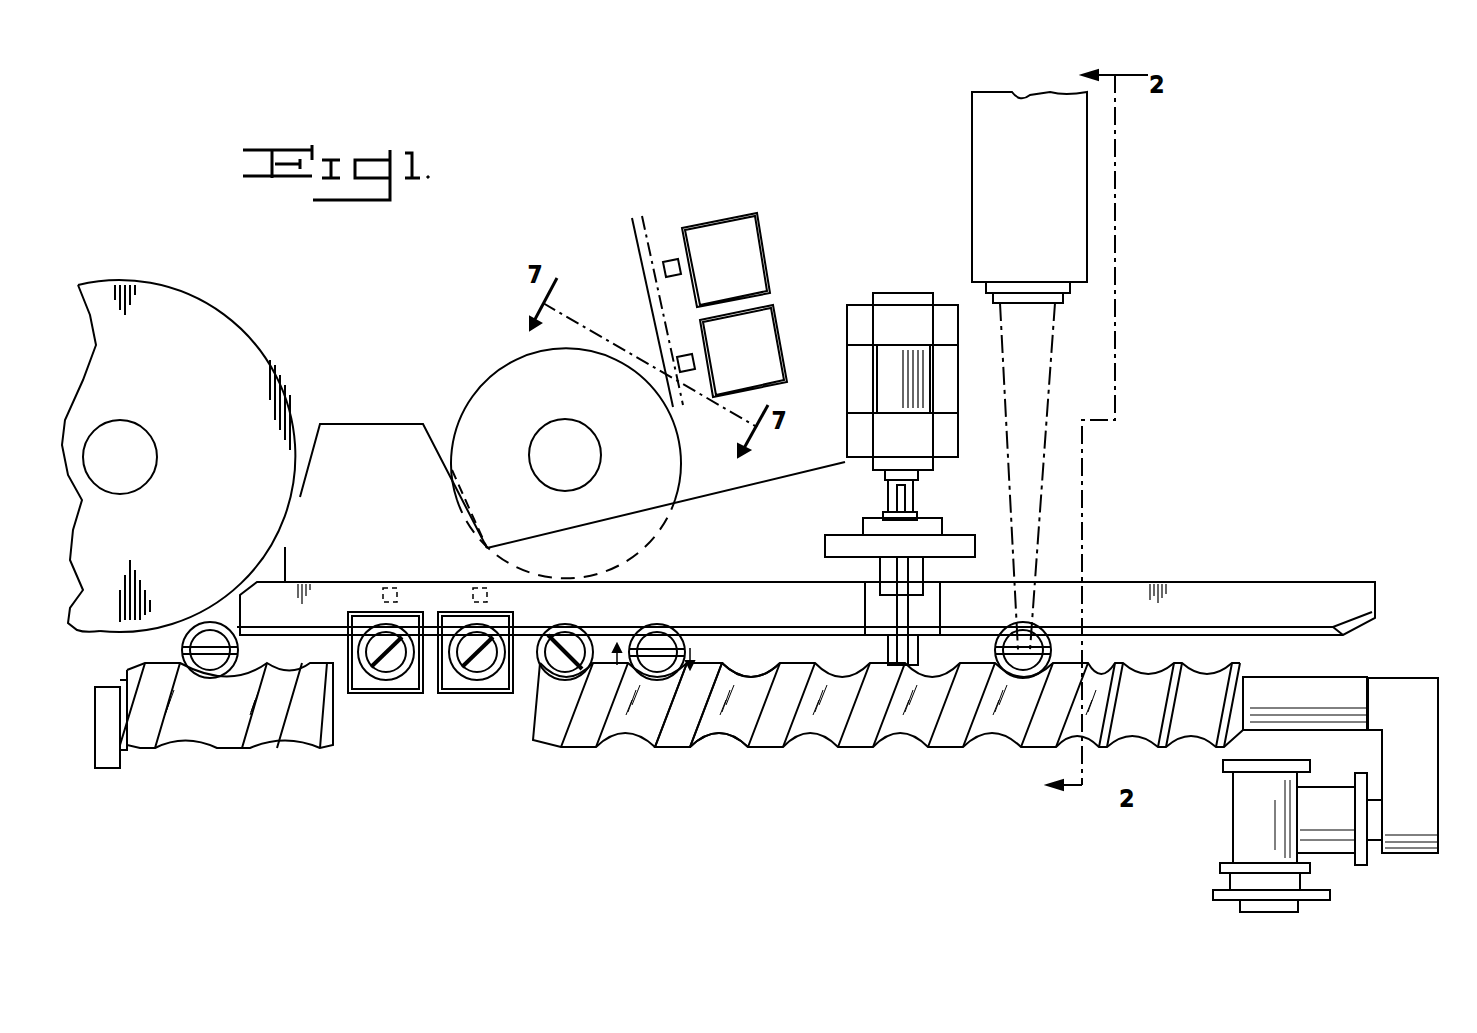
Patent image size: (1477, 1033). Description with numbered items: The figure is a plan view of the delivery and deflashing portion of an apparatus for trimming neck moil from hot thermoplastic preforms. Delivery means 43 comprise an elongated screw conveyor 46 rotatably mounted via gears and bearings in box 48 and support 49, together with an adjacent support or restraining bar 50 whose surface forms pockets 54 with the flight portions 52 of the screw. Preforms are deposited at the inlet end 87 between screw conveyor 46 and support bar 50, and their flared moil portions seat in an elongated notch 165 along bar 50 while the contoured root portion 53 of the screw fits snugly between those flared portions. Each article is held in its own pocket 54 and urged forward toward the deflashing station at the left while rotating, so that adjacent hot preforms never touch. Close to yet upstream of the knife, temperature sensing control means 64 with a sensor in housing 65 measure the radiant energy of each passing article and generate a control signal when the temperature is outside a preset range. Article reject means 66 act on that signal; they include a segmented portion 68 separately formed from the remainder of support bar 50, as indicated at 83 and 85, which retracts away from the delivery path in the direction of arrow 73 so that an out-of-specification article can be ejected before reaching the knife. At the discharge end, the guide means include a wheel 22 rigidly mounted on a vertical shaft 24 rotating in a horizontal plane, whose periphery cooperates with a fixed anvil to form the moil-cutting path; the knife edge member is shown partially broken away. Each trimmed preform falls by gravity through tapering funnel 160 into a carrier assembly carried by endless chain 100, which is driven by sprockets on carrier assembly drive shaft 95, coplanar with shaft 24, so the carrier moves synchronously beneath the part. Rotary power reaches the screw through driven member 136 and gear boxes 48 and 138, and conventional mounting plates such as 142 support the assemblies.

The wheel 22 is at (142, 427).
The vertical shaft 24 is at (120, 457).
The mounting plate 142 is at (376, 434).
The carrier assembly drive shaft 95 is at (570, 418).
The endless chain 100 is at (648, 236).
The tapering funnel 160 is at (787, 336).
The article reject means 66 is at (810, 414).
The segmented portion 68 is at (933, 595).
The arrow 73 is at (884, 577).
The separation of segmented portion 83 is at (865, 612).
The separation of segmented portion 85 is at (940, 627).
The temperature sensing control means 64 is at (960, 190).
The housing 65 is at (1023, 110).
The support bar 50 is at (1192, 590).
The elongated notch 165 is at (1258, 630).
The inlet end 87 is at (1290, 665).
The box 48 is at (1410, 747).
The screw conveyor 46 is at (610, 750).
The flight portions 52 is at (672, 746).
The root portion 53 is at (718, 742).
The pockets 54 is at (758, 657).
The delivery means 43 is at (762, 815).
The support 49 is at (108, 768).
The gear box 138 is at (1245, 824).
The driven member 136 is at (1215, 895).